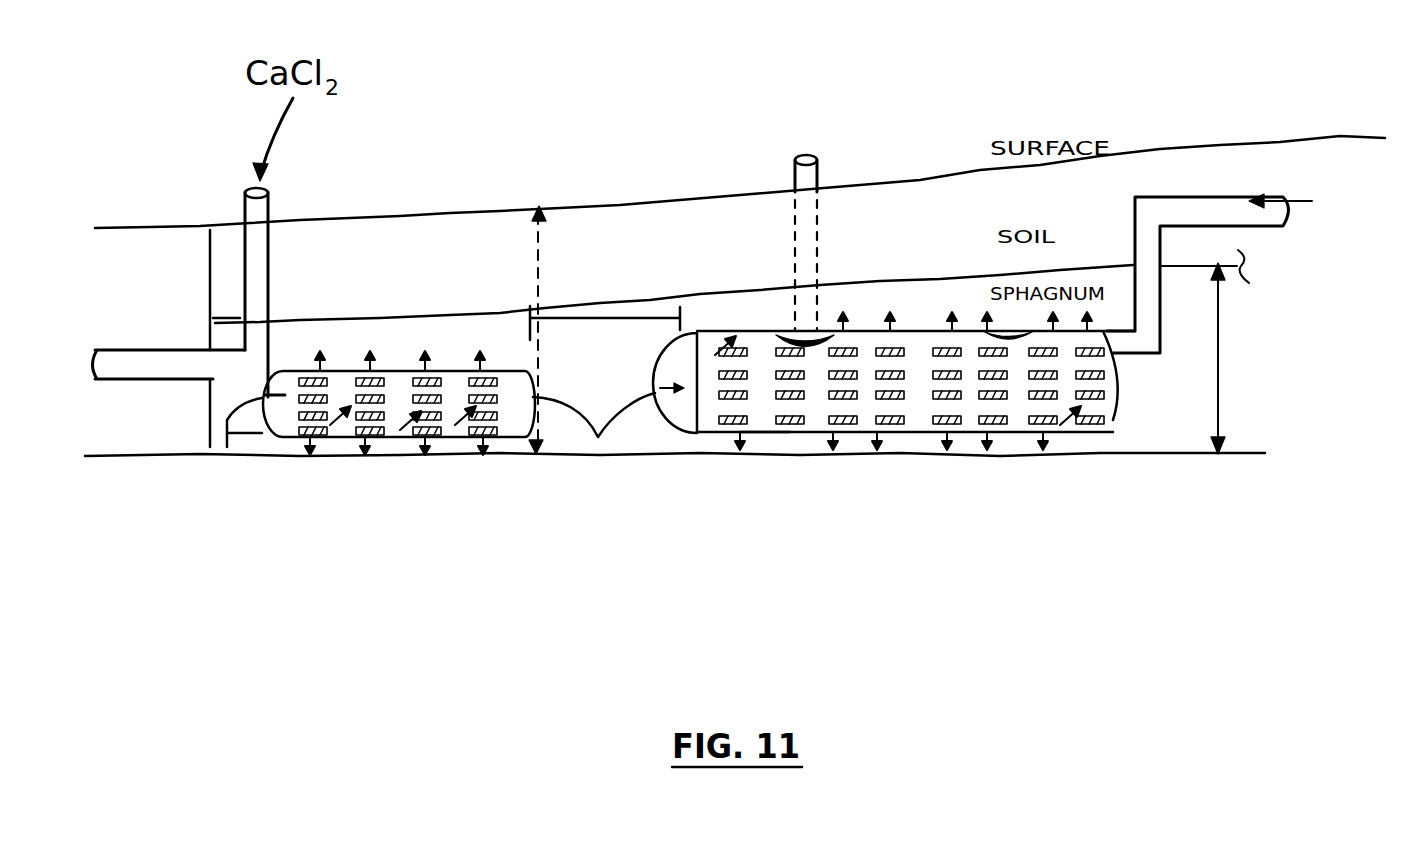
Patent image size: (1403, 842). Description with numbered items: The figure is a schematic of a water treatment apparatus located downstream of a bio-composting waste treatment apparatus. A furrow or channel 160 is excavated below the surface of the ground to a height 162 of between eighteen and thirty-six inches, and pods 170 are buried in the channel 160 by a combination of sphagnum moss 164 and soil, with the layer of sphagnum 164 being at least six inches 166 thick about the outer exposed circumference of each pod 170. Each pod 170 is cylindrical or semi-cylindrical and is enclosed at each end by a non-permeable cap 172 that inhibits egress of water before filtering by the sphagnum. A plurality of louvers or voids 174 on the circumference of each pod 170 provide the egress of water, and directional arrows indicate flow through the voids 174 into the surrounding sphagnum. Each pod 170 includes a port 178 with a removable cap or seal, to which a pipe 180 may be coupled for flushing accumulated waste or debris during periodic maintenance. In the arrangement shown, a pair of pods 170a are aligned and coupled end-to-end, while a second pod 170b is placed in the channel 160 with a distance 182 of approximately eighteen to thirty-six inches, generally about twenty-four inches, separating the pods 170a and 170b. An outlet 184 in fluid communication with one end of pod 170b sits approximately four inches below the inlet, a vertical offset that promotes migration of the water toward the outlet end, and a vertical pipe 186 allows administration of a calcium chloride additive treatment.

The channel 160 is at (246, 445).
The height of the channel 162 is at (545, 300).
The sphagnum moss 164 is at (385, 320).
The six inch layer thickness 166 is at (1217, 368).
The pod 170 is at (382, 465).
The pair of pods 170a is at (870, 433).
The second pod 170b is at (405, 445).
The non-permeable cap 172 is at (598, 437).
The voids 174 is at (745, 435).
The port 178 is at (822, 326).
The pipe 180 is at (821, 162).
The distance 182 is at (605, 335).
The outlet 184 is at (263, 399).
The vertical pipe 186 is at (265, 250).